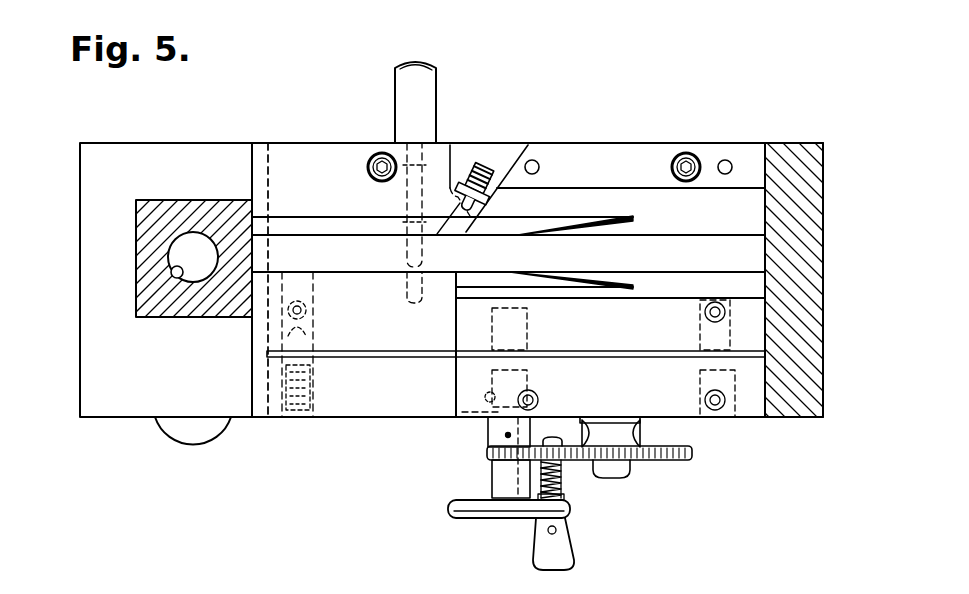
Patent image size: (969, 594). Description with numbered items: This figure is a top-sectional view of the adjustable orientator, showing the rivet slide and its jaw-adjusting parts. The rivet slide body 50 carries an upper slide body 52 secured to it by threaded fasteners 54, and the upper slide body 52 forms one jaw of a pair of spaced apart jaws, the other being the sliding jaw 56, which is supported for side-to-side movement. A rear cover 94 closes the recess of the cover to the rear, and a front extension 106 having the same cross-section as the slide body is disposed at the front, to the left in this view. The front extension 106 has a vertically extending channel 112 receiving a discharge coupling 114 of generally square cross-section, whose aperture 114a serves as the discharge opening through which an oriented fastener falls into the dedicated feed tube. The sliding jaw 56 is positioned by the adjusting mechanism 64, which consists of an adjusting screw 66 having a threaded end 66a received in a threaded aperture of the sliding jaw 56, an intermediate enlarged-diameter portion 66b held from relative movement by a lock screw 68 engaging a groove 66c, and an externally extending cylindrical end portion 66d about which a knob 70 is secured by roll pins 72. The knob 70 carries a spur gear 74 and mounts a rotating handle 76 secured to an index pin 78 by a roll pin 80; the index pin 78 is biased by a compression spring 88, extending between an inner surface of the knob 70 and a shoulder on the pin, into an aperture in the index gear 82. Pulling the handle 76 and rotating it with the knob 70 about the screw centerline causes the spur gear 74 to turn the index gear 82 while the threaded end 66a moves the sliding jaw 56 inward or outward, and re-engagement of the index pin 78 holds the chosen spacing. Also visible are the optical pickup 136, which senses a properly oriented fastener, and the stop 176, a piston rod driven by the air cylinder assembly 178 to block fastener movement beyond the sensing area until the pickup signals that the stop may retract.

The rivet slide body 50 is at (331, 419).
The upper slide body 52 is at (603, 153).
The threaded fasteners 54 is at (373, 153).
The sliding jaw 56 is at (370, 324).
The adjusting mechanism 64 is at (702, 510).
The adjusting screw 66 is at (487, 422).
The threaded end 66a is at (527, 312).
The intermediate enlarged-diameter portion 66b is at (527, 372).
The groove 66c is at (467, 412).
The externally extending cylindrical end portion 66d is at (488, 467).
The lock screw 68 is at (478, 394).
The knob 70 is at (448, 508).
The roll pins 72 is at (506, 476).
The spur gear 74 is at (487, 452).
The rotating handle 76 is at (573, 556).
The index pin 78 is at (563, 473).
The roll pin 80 is at (556, 531).
The index gear 82 is at (671, 462).
The compression spring 88 is at (564, 497).
The rear cover 94 is at (818, 286).
The front extension 106 is at (112, 410).
The vertically extending channel 112 is at (157, 200).
The discharge coupling 114 is at (136, 236).
The aperture 114a is at (172, 273).
The optical pickup 136 is at (488, 162).
The stop 176 is at (427, 248).
The air cylinder assembly 178 is at (436, 85).